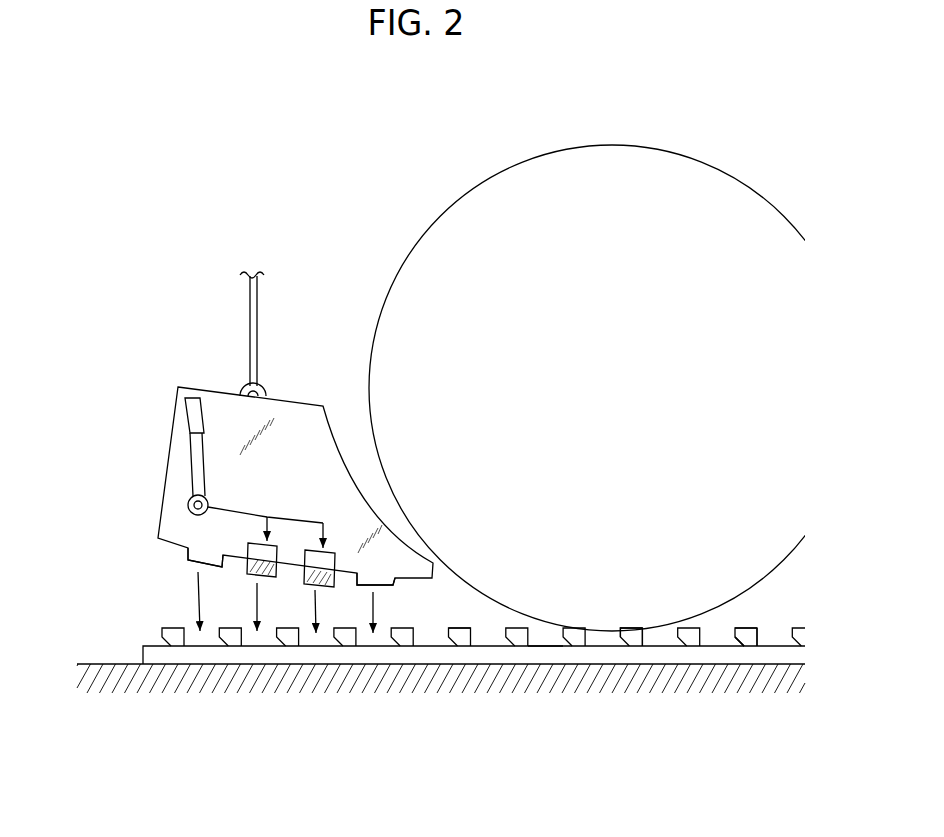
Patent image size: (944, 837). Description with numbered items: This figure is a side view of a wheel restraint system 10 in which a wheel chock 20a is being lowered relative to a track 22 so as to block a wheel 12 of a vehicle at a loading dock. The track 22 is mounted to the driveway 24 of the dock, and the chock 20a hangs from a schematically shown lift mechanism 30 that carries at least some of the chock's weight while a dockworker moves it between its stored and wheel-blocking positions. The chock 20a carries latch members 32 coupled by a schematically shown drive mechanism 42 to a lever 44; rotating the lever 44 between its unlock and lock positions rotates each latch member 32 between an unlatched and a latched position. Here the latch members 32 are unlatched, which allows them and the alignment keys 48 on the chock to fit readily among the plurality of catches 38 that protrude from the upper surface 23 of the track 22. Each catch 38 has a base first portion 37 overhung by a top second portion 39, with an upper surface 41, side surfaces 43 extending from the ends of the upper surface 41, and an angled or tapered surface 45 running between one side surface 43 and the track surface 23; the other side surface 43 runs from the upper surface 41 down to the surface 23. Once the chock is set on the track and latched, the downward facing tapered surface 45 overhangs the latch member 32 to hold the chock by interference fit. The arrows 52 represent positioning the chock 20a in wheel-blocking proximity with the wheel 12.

The wheel restraint system 10 is at (135, 250).
The wheel 12 is at (422, 237).
The wheel chock 20a is at (297, 402).
The track 22 is at (142, 652).
The surface of the track 23 is at (552, 644).
The driveway 24 is at (103, 655).
The lift mechanism 30 is at (250, 348).
The latch member 32 is at (277, 574).
The first portion 37 is at (636, 643).
The catch 38 is at (462, 626).
The second portion 39 is at (618, 630).
The upper surface 41 is at (746, 627).
The drive mechanism 42 is at (290, 517).
The side surfaces 43 is at (737, 638).
The lever 44 is at (190, 465).
The angled or tapered surface 45 is at (741, 640).
The alignment keys 48 is at (195, 570).
The arrows 52 is at (197, 602).